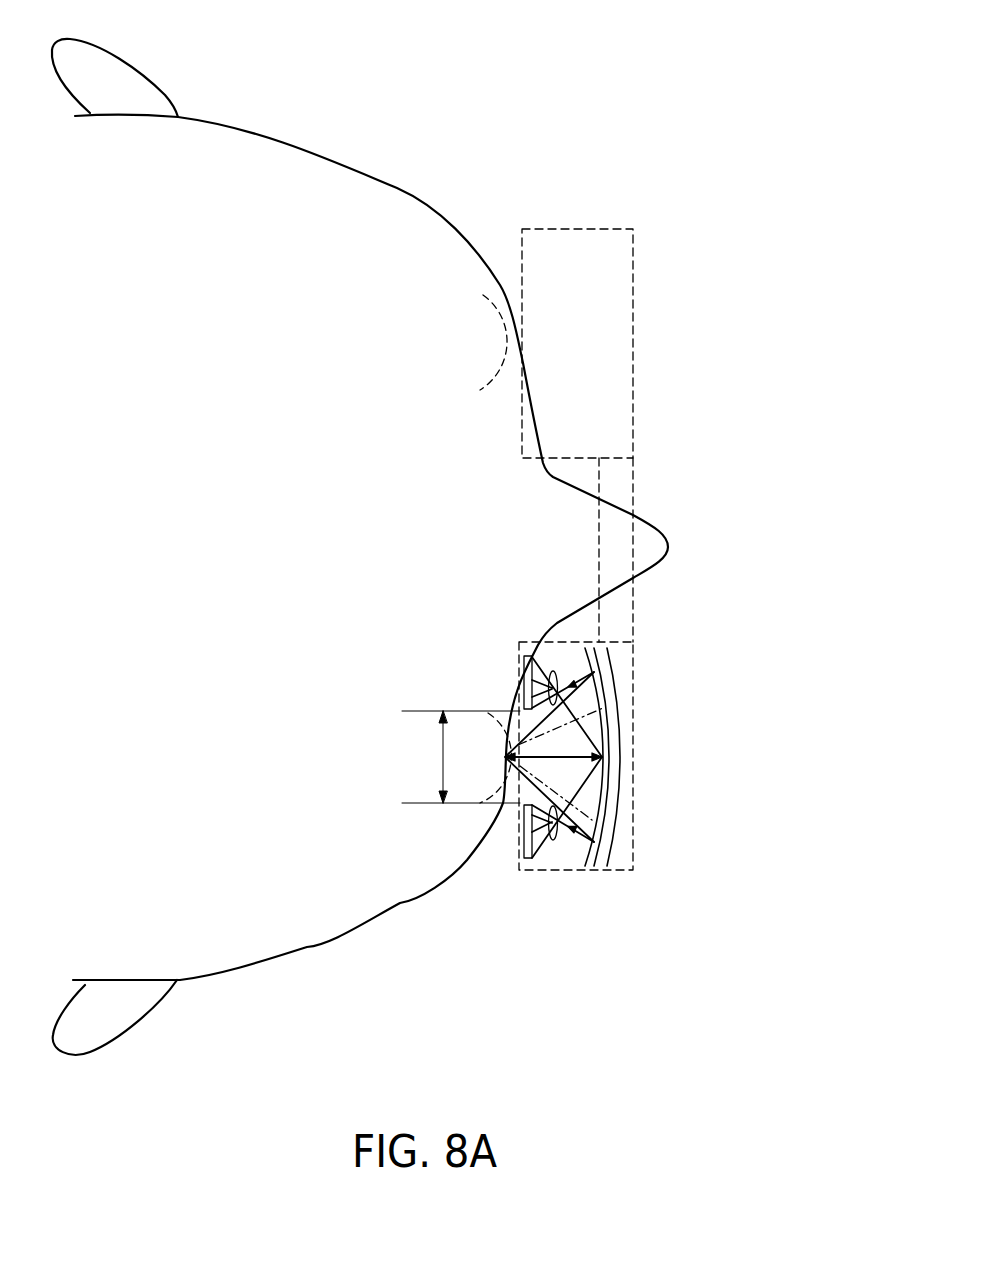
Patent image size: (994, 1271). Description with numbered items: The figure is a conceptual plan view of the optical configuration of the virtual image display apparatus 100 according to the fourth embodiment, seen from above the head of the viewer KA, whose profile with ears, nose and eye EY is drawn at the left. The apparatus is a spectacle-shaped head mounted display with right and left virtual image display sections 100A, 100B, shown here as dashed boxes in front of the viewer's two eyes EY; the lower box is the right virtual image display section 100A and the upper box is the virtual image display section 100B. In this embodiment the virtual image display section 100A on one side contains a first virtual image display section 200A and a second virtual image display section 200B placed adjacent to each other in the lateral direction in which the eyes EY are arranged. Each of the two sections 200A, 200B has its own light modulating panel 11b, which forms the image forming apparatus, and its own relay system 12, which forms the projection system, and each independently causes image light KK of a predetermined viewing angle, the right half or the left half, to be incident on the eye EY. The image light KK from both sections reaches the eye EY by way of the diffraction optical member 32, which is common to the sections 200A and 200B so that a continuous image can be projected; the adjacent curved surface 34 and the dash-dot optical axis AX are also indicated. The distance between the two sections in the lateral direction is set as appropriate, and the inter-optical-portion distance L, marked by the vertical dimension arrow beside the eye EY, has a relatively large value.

The viewer KA is at (398, 188).
The eye EY is at (505, 293).
The virtual image display apparatus 100 is at (690, 152).
The virtual image display section 100B is at (675, 307).
The virtual image display section 100A is at (650, 875).
The second virtual image display section 200B is at (502, 627).
The first virtual image display section 200A is at (515, 887).
The light modulating panel 11b is at (528, 656).
The relay system 12 is at (553, 671).
The image light KK is at (610, 692).
The inner reflecting surface 34 is at (607, 793).
The diffraction optical member 32 is at (622, 755).
The optical axis AX is at (620, 722).
The inter-optical-portion distance L is at (461, 757).